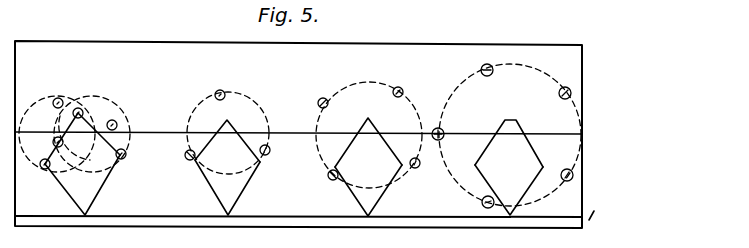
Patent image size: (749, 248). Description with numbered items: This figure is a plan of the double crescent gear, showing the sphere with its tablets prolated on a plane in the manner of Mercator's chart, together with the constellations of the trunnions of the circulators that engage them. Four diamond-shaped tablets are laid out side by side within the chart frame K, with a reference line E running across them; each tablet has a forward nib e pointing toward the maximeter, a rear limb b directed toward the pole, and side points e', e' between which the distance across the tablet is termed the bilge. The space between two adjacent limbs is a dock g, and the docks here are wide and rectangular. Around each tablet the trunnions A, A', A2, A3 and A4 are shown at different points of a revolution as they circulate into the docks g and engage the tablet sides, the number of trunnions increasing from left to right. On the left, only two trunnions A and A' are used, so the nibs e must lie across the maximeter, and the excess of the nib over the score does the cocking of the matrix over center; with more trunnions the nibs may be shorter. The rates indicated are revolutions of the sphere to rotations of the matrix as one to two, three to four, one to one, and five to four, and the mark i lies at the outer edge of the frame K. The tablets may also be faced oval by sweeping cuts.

The casing frame K is at (298, 134).
The reference line E is at (298, 126).
The dock g is at (300, 135).
The upper apex of cam e is at (294, 140).
The bilge point e' is at (295, 166).
The lower apex of cam b is at (294, 185).
The trunnion A is at (269, 155).
The trunnion A' is at (253, 123).
The trunnion A2 is at (384, 109).
The trunnion A3 is at (493, 125).
The ball in fourth position A4 is at (564, 170).
The index mark i is at (591, 216).